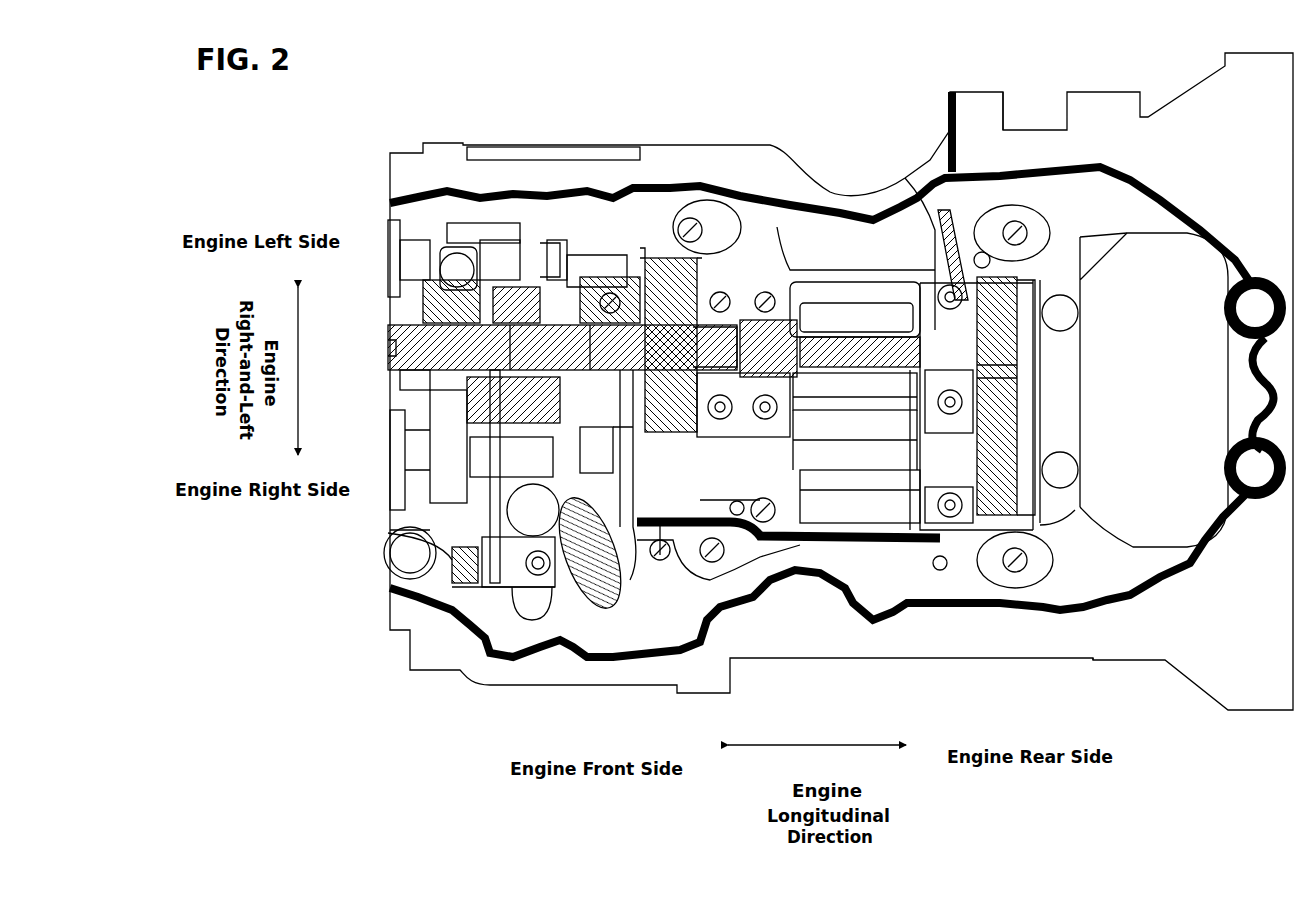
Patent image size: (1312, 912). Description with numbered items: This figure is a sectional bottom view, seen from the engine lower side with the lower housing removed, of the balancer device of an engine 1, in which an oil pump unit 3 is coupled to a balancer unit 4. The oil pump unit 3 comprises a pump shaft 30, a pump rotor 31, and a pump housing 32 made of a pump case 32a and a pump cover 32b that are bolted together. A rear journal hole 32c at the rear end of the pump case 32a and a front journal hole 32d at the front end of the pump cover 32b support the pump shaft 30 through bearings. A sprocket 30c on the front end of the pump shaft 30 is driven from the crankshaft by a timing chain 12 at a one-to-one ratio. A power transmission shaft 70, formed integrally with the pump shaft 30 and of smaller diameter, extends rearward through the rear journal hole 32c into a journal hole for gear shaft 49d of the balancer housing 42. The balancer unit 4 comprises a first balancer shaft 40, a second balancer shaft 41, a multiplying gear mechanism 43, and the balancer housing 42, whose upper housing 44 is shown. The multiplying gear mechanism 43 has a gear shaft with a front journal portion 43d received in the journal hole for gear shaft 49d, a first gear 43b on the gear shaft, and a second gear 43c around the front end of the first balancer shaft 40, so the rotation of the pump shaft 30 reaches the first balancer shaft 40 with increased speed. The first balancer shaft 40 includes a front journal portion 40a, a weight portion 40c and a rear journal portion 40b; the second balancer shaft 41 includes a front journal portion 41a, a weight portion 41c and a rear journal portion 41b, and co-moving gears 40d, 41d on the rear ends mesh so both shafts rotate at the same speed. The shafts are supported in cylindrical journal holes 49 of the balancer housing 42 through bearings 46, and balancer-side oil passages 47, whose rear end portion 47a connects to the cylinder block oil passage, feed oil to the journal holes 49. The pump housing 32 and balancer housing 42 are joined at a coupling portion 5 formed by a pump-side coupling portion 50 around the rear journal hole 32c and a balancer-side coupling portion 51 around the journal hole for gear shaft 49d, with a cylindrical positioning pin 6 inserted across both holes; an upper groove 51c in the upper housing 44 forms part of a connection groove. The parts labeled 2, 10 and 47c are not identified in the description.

The engine 1 is at (425, 86).
The crankcase 2 is at (1040, 580).
The oil pump unit 3 is at (437, 220).
The balancer unit 4 is at (1035, 178).
The coupling portion 5 is at (580, 263).
The positioning pin 6 is at (560, 374).
The oil pan 10 is at (702, 695).
The timing chain 12 is at (400, 430).
The pump shaft 30 is at (545, 297).
The sprocket 30c is at (400, 350).
The pump rotor 31 is at (513, 425).
The pump housing 32 is at (560, 74).
The pump case 32a is at (500, 230).
The pump cover 32b is at (462, 207).
The rear journal hole 32c is at (540, 230).
The front journal hole 32d is at (405, 380).
The first balancer shaft 40 is at (807, 565).
The front journal portion 40a is at (840, 437).
The rear journal portion 40b is at (856, 494).
The weight portion 40c is at (863, 492).
The co-moving gear 40d is at (1087, 510).
The second balancer shaft 41 is at (851, 330).
The front journal portion 41a is at (773, 330).
The rear journal portion 41b is at (950, 90).
The weight portion 41c is at (888, 317).
The co-moving gear 41d is at (1037, 300).
The balancer housing 42 is at (1080, 285).
The multiplying gear mechanism 43 is at (680, 256).
The first gear 43b is at (705, 250).
The second gear 43c is at (630, 570).
The front journal portion 43d is at (595, 612).
The upper housing 44 is at (823, 475).
The bearing 46 is at (600, 292).
The balancer-side oil passage 47 is at (737, 432).
The rear end portion 47a is at (1025, 228).
The bearing retainer 47c is at (967, 380).
The journal hole 49 is at (787, 260).
The journal hole for gear shaft 49d is at (643, 250).
The pump-side coupling portion 50 is at (562, 420).
The balancer-side coupling portion 51 is at (590, 440).
The upper groove 51c is at (582, 325).
The power transmission shaft 70 is at (612, 290).